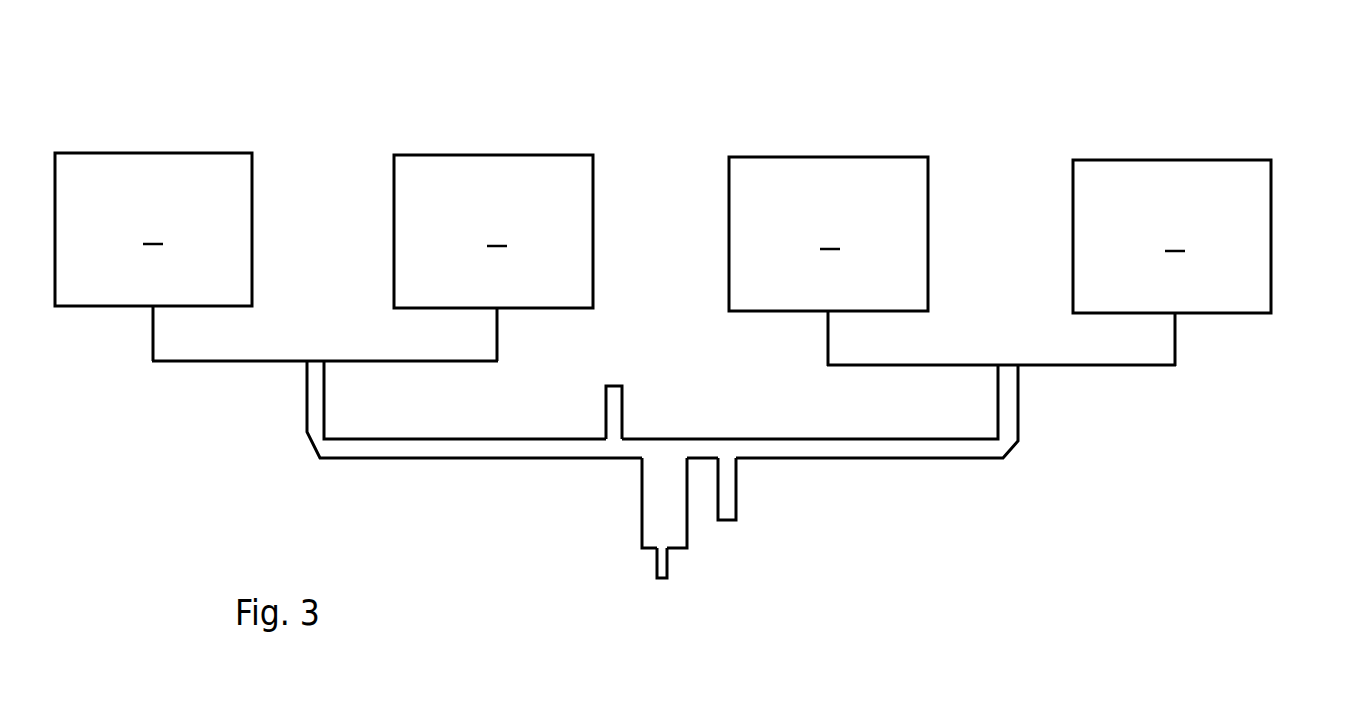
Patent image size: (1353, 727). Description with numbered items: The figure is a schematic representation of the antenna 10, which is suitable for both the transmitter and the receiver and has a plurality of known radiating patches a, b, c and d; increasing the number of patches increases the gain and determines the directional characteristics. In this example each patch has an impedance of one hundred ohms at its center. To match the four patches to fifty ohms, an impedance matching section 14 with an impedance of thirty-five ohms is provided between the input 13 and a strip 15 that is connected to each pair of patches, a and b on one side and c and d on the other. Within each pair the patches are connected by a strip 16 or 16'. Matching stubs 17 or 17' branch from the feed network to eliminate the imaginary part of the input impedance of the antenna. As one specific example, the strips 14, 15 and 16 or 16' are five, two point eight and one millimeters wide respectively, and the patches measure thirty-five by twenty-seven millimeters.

The antenna 10 is at (1256, 134).
The input 13 is at (667, 570).
The impedance matching section 14 is at (642, 498).
The strip 15 is at (952, 461).
The strip 16 is at (325, 377).
The strip 16' is at (1048, 353).
The matching stub 17 is at (770, 489).
The matching stub 17' is at (650, 392).